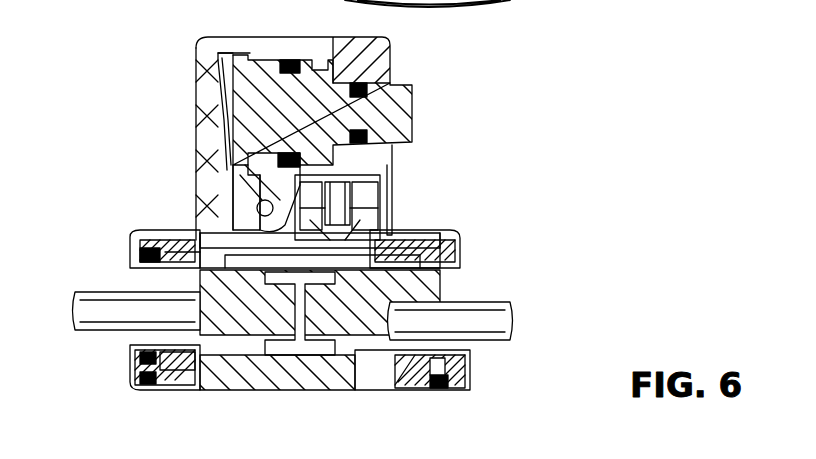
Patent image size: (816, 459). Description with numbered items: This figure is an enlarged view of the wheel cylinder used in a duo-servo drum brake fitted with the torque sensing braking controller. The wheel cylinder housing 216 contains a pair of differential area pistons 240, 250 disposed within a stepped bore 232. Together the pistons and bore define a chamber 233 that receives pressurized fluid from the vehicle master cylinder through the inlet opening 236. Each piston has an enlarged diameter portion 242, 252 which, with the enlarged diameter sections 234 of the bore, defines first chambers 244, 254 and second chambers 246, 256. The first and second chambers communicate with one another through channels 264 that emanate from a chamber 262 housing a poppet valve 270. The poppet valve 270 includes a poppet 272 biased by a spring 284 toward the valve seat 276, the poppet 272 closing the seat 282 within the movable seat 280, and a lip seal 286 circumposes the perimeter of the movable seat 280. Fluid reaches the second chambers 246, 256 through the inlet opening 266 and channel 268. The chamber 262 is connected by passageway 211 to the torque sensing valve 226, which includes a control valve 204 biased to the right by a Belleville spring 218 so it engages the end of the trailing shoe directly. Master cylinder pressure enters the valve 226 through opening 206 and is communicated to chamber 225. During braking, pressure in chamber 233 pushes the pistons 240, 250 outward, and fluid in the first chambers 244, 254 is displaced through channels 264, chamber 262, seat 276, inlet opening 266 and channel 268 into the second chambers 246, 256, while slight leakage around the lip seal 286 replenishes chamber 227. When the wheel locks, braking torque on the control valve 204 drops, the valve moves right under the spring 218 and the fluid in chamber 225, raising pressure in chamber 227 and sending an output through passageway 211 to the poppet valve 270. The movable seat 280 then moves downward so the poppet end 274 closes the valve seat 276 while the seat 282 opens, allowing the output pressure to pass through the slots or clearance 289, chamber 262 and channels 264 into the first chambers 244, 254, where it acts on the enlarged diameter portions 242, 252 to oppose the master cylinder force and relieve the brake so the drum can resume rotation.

The control valve 204 is at (396, 82).
The wheel cylinder housing 216 is at (393, 47).
The Belleville spring 218 is at (220, 56).
The torque sensing valve 226 is at (222, 70).
The chamber 225 is at (228, 53).
The chamber 227 is at (323, 67).
The passageway 211 is at (248, 175).
The opening 206 is at (250, 140).
The seat 282 is at (250, 170).
The slots or clearance 289 is at (262, 176).
The inlet opening 236 is at (266, 186).
The spring 284 is at (272, 205).
The poppet 272 is at (393, 170).
The poppet valve 270 is at (411, 141).
The lip seal 286 is at (390, 185).
The chamber 262 is at (388, 200).
The movable seat 280 is at (386, 215).
The poppet end 274 is at (385, 228).
The valve seat 276 is at (383, 240).
The channels 264 is at (240, 233).
The first chamber 244 is at (420, 272).
The inlet opening 266 is at (430, 292).
The chamber 233 is at (80, 306).
The enlarged diameter portion 242 is at (470, 334).
The first chamber 254 is at (140, 240).
The channel 268 is at (145, 258).
The differential area piston 240 is at (465, 352).
The differential area piston 250 is at (130, 340).
The stepped bore 232 is at (138, 355).
The enlarged diameter portion 252 is at (145, 370).
The second chamber 256 is at (138, 385).
The second chamber 246 is at (452, 384).
The enlarged diameter sections 234 is at (448, 368).